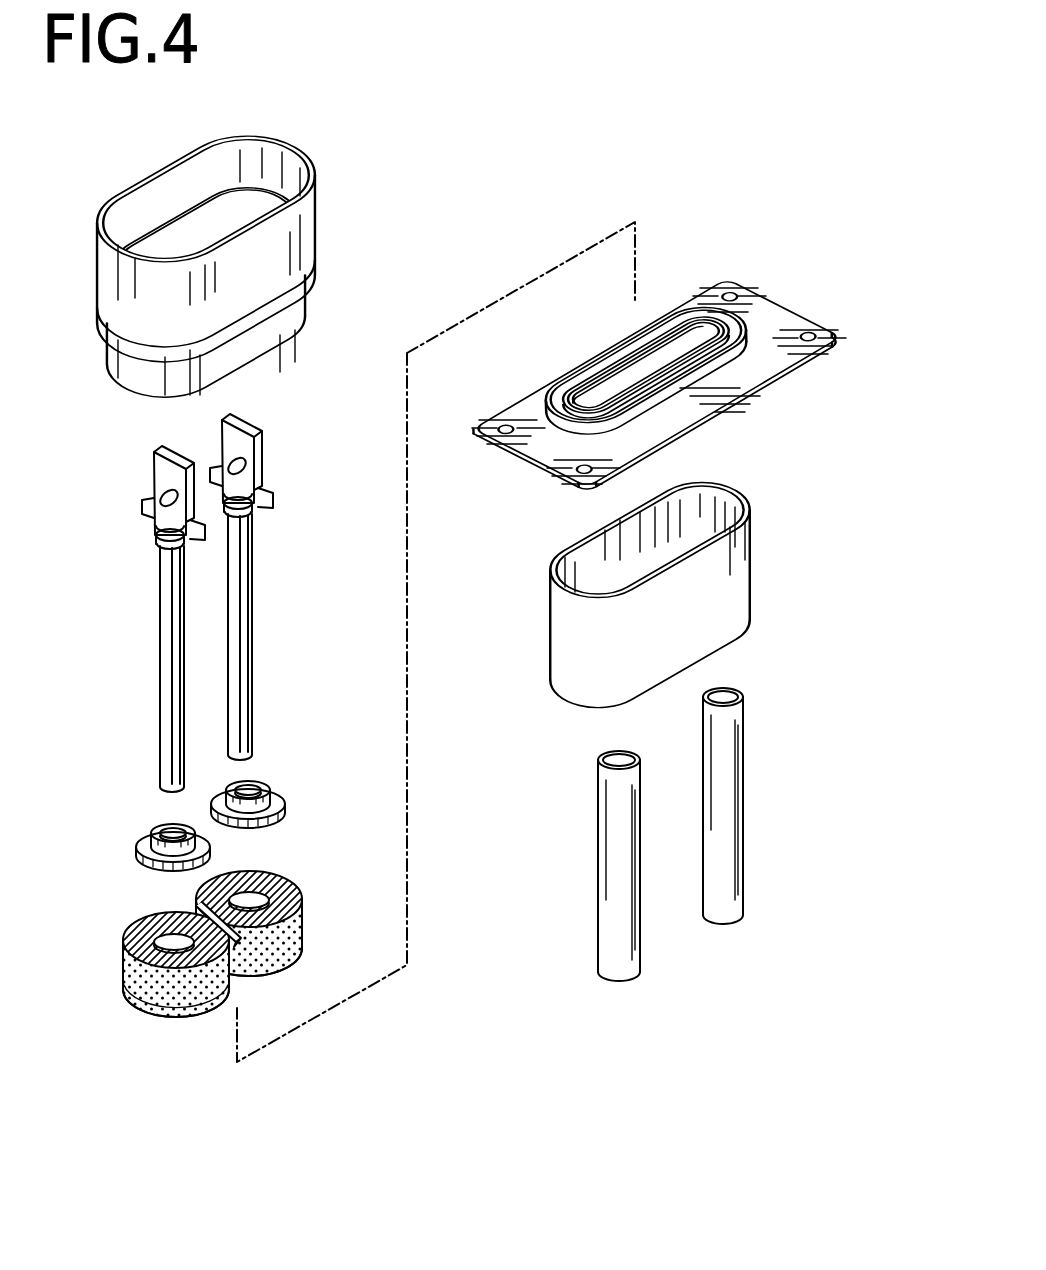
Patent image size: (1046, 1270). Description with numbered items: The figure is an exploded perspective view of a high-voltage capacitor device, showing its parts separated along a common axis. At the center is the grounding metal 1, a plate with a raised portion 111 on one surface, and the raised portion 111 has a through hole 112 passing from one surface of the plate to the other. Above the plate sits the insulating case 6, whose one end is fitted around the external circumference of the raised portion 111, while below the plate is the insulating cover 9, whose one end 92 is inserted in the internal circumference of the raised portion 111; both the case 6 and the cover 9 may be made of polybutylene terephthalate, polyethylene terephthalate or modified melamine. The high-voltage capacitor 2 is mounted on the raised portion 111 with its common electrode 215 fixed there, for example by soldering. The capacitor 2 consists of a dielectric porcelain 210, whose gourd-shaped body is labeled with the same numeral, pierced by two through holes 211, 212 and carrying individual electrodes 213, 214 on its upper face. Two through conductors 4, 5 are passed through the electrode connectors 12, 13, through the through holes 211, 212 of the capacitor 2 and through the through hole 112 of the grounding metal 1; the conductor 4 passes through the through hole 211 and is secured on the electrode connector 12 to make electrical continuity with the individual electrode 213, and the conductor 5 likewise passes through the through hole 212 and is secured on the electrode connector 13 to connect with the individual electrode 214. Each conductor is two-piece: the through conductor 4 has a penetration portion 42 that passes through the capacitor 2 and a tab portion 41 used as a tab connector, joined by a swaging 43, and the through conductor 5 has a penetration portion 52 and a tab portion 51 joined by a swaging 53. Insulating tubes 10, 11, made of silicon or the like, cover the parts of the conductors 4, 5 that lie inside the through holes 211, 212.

The grounding metal 1 is at (696, 340).
The raised portion 111 is at (685, 312).
The through hole 112 is at (632, 365).
The high-voltage capacitor 2 is at (207, 972).
The dielectric porcelain 210 is at (297, 963).
The through hole 211 is at (170, 932).
The through hole 212 is at (258, 888).
The individual electrode 213 is at (124, 938).
The individual electrode 214 is at (300, 889).
The common electrode 215 is at (183, 1020).
The through conductor 4 is at (116, 619).
The tab portion 41 is at (220, 446).
The penetration portion 42 is at (105, 669).
The swaging 43 is at (105, 562).
The through conductor 5 is at (285, 587).
The tab portion 51 is at (266, 456).
The penetration portion 52 is at (253, 607).
The swaging 53 is at (253, 538).
The insulating case 6 is at (320, 210).
The insulating cover 9 is at (650, 595).
The sleeve opening 92 is at (553, 565).
The insulating tube 10 is at (610, 985).
The insulating tube 11 is at (712, 923).
The electrode connector 12 is at (140, 830).
The electrode connector 13 is at (273, 783).